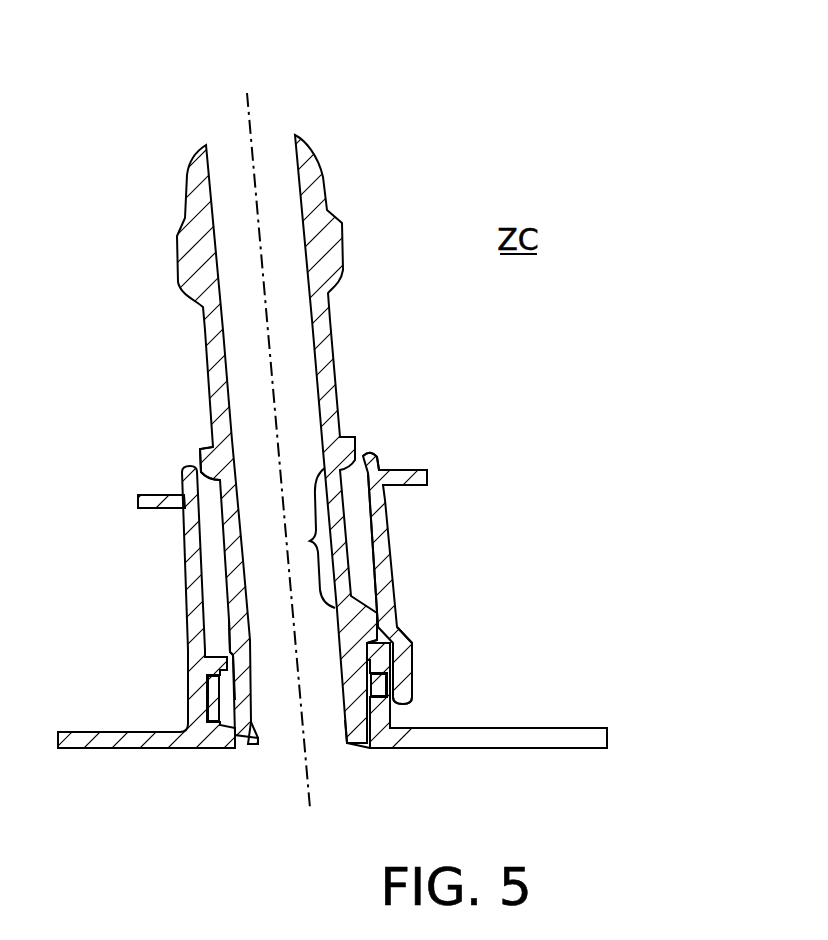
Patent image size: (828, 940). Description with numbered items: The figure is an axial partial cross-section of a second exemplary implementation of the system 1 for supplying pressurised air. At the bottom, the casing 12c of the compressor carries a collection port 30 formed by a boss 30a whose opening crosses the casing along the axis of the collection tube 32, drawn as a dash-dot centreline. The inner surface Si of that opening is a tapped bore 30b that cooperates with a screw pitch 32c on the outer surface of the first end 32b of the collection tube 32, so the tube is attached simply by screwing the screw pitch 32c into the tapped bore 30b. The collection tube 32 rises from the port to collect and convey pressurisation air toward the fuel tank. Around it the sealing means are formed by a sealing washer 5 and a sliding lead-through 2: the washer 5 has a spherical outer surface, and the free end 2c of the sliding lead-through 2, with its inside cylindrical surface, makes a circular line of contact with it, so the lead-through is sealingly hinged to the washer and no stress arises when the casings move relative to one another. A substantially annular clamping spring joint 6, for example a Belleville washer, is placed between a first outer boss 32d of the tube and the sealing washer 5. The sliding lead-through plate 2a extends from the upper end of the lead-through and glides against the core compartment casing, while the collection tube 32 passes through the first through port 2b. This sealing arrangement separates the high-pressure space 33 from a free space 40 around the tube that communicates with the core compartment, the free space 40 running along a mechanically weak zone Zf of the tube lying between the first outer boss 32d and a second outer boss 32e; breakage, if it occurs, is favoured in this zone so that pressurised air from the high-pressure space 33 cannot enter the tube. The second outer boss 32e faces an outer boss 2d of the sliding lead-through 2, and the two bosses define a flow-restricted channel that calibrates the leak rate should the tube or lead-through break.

The system for supplying pressurised air 1 is at (413, 167).
The sliding lead-through 2 is at (378, 513).
The sliding lead-through plate 2a is at (423, 470).
The first through port 2b is at (360, 567).
The free end 2c is at (412, 673).
The outer boss 2d is at (370, 455).
The sealing washer 5 is at (210, 692).
The clamping spring joint 6 is at (400, 647).
The casing of the compressor 12c is at (577, 735).
The collection port 30 is at (295, 762).
The boss 30a is at (378, 712).
The tapped bore 30b is at (255, 747).
The collection tube 32 is at (337, 263).
The first end of the collection tube 32b is at (347, 740).
The screw pitch 32c is at (385, 690).
The first outer boss 32d is at (205, 652).
The second outer boss 32e is at (212, 455).
The high-pressure space 33 is at (525, 570).
The free space 40 is at (207, 553).
The mechanically weak zone Zf is at (306, 538).
The inner surface Si is at (370, 750).